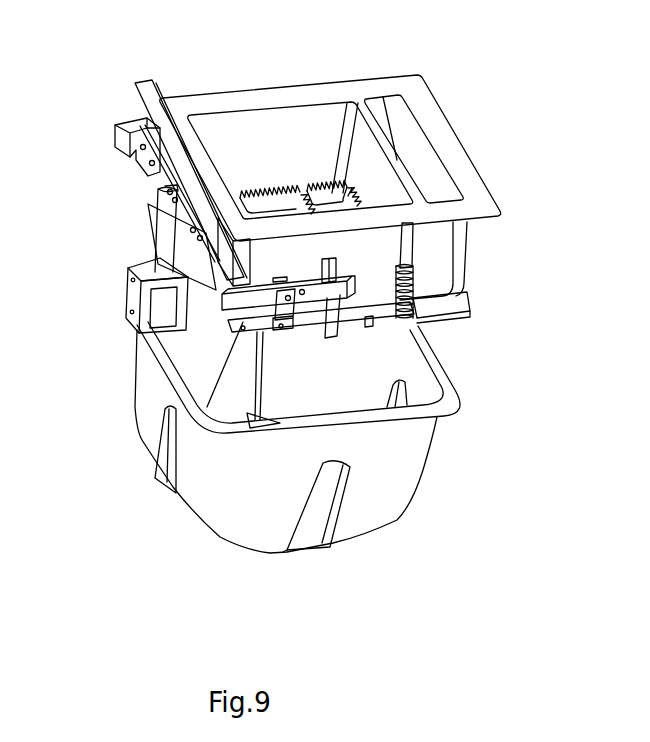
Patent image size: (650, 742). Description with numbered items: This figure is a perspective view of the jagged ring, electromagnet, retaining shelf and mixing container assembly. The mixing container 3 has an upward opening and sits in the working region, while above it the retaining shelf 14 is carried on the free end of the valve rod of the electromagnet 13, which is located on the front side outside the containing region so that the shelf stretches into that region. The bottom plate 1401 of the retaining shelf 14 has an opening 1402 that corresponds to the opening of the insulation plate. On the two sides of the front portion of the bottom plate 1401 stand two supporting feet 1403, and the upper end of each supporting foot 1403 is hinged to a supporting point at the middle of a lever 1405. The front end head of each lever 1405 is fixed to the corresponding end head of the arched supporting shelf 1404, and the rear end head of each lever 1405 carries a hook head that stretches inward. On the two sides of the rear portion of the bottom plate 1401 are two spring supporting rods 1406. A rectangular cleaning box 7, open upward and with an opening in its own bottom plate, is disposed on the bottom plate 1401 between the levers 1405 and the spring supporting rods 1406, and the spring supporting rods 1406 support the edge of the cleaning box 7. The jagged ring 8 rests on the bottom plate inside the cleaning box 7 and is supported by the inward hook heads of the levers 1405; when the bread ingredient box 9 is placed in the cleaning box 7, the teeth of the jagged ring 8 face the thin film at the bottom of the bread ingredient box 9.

The mixing container 3 is at (247, 505).
The cleaning box 7 is at (153, 110).
The jagged ring 8 is at (350, 188).
The bread ingredient box 9 is at (225, 107).
The electromagnet 13 is at (147, 282).
The retaining shelf 14 is at (97, 158).
The bottom plate 1401 is at (428, 315).
The opening 1402 is at (275, 213).
The supporting foot 1403 is at (281, 305).
The arched supporting shelf 1404 is at (160, 185).
The lever 1405 is at (340, 297).
The spring supporting rod 1406 is at (410, 252).